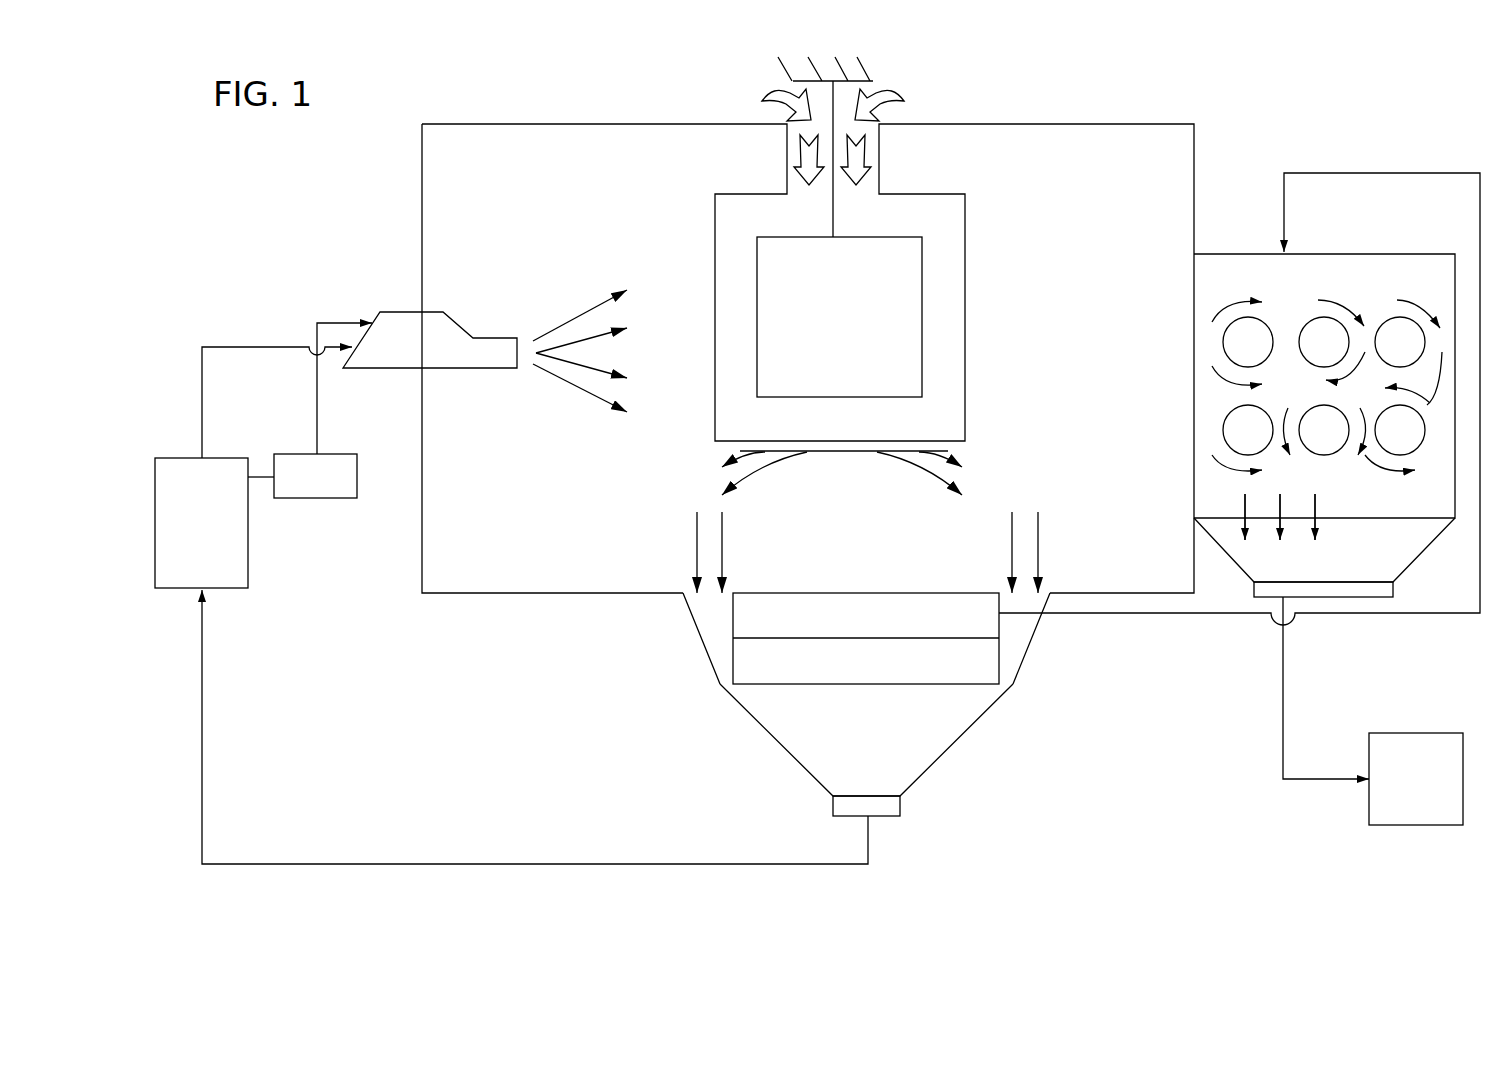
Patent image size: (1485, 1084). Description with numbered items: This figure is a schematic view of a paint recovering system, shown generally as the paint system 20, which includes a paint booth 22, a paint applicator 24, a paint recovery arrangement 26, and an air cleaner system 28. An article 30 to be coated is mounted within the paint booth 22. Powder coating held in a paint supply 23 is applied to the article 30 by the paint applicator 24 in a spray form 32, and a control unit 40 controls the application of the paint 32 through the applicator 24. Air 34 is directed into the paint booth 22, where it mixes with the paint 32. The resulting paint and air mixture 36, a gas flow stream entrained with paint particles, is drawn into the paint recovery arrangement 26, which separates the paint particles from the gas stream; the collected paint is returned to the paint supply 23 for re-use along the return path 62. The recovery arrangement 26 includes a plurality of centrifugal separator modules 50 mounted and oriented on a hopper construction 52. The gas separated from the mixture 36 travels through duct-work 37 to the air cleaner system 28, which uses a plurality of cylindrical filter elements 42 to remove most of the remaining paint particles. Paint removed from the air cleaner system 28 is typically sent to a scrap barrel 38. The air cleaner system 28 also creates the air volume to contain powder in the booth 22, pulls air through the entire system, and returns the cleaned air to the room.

The paint system 20 is at (530, 108).
The paint booth 22 is at (608, 124).
The paint supply 23 is at (248, 575).
The paint applicator 24 is at (376, 298).
The paint recovery arrangement 26 is at (860, 580).
The air cleaner system 28 is at (1241, 148).
The article 30 is at (902, 236).
The spray form 32 is at (552, 318).
The air 34 is at (893, 103).
The paint and air mixture 36 is at (902, 478).
The duct-work 37 is at (1167, 614).
The scrap barrel 38 is at (1395, 733).
The control unit 40 is at (340, 498).
The cylindrical filter elements 42 is at (1318, 366).
The centrifugal separator module 50 is at (1018, 646).
The hopper construction 52 is at (955, 757).
The recycle line 62 is at (438, 863).